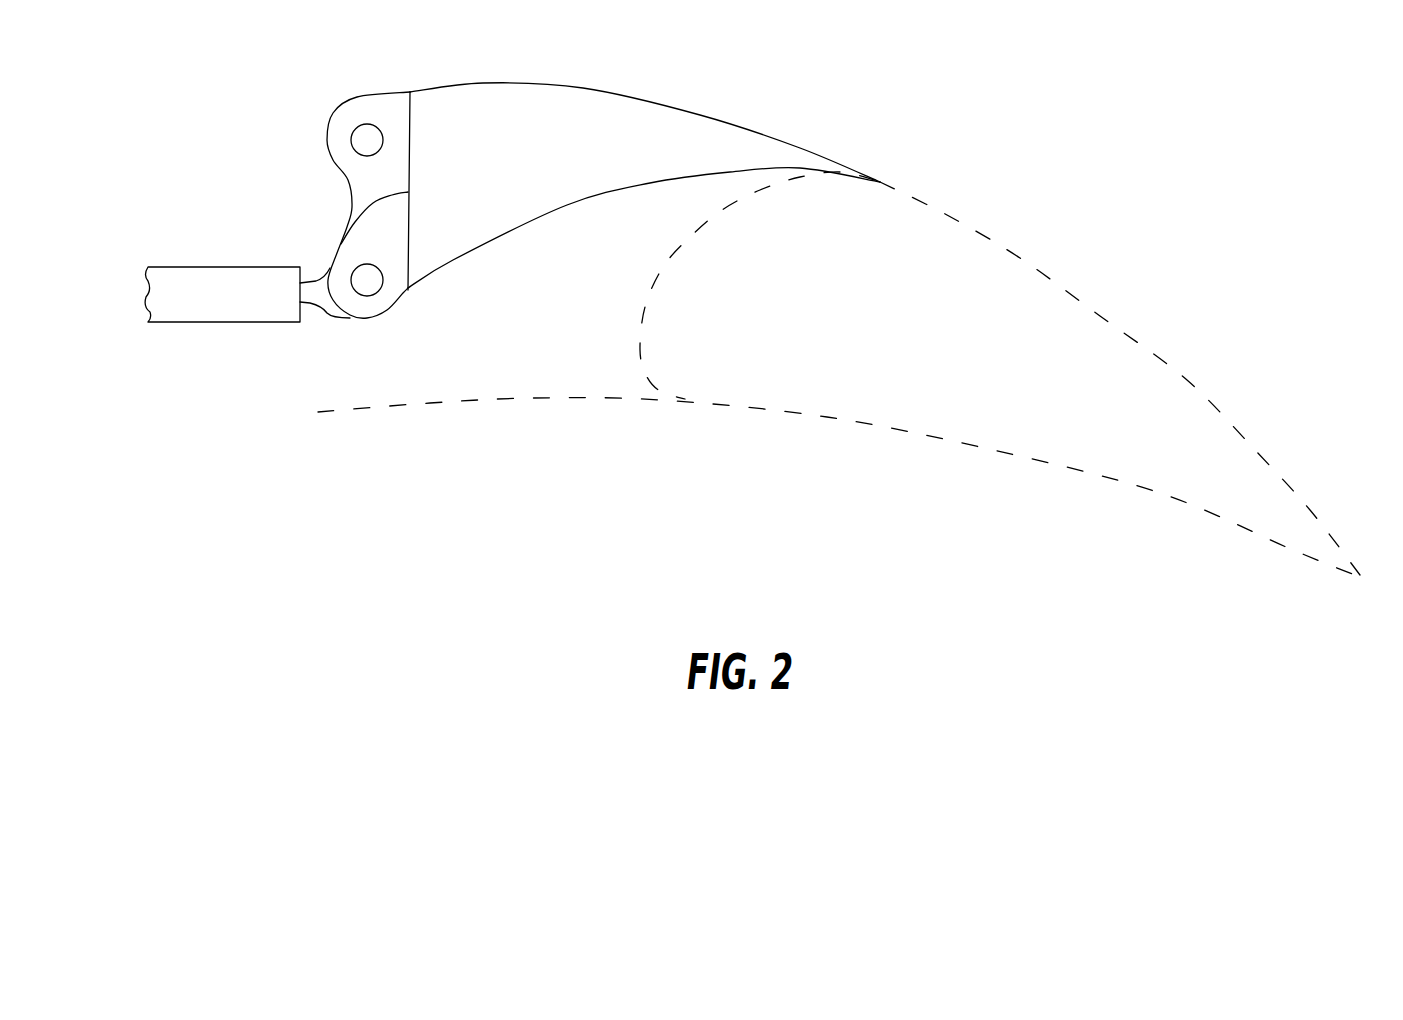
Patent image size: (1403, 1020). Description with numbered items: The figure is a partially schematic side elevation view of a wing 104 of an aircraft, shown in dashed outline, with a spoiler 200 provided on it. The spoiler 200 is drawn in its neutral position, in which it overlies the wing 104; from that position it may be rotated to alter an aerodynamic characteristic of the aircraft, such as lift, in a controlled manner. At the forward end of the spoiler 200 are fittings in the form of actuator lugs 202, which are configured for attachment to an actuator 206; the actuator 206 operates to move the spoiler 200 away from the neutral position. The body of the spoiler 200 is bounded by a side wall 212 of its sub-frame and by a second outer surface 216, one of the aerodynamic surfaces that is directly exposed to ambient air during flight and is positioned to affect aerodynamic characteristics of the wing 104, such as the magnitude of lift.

The wing 104 is at (953, 237).
The spoiler 200 is at (644, 170).
The actuator lugs 202 is at (383, 303).
The actuator 206 is at (220, 280).
The side wall 212 is at (563, 205).
The second outer surface 216 is at (583, 87).